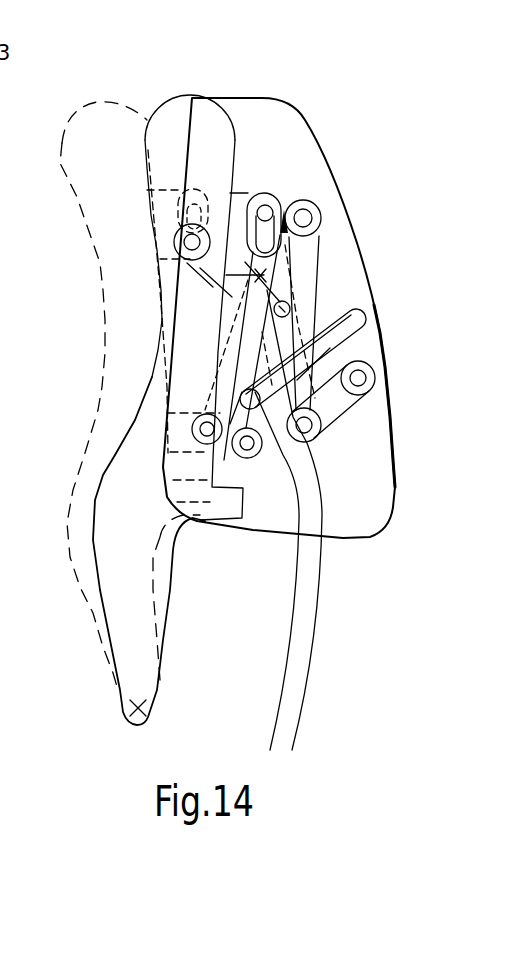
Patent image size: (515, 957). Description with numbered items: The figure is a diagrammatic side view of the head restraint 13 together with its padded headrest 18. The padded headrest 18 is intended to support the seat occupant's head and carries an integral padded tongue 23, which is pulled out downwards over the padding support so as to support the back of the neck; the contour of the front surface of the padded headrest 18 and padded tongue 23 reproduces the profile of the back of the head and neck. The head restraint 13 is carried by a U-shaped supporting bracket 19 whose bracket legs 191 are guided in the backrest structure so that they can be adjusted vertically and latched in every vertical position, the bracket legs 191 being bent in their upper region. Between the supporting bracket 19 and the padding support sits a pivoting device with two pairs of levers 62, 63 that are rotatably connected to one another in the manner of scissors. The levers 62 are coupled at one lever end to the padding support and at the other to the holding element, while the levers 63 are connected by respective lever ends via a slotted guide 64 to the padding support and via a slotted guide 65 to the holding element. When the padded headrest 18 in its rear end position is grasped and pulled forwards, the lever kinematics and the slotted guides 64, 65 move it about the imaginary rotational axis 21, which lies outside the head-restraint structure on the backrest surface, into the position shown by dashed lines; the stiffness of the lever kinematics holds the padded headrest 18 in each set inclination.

The head restraint 13 is at (345, 131).
The padded headrest 18 is at (177, 143).
The slotted guide 64 is at (245, 228).
The levers 63 is at (316, 253).
The levers 62 is at (330, 348).
The slotted guide 65 is at (333, 397).
The supporting bracket 19 is at (322, 617).
The bracket legs 191 is at (293, 658).
The padded tongue 23 is at (133, 580).
The rotational axis 21 is at (125, 708).